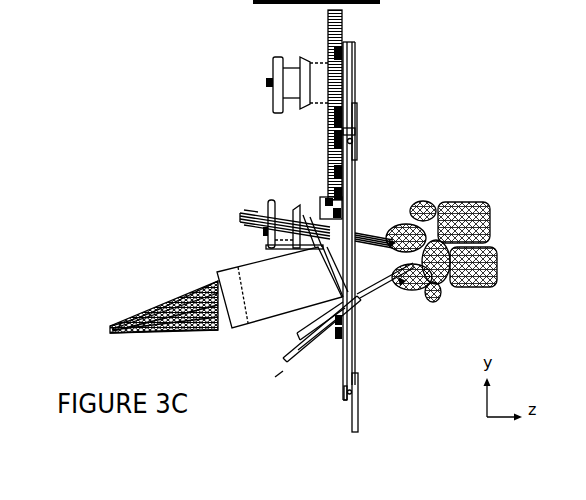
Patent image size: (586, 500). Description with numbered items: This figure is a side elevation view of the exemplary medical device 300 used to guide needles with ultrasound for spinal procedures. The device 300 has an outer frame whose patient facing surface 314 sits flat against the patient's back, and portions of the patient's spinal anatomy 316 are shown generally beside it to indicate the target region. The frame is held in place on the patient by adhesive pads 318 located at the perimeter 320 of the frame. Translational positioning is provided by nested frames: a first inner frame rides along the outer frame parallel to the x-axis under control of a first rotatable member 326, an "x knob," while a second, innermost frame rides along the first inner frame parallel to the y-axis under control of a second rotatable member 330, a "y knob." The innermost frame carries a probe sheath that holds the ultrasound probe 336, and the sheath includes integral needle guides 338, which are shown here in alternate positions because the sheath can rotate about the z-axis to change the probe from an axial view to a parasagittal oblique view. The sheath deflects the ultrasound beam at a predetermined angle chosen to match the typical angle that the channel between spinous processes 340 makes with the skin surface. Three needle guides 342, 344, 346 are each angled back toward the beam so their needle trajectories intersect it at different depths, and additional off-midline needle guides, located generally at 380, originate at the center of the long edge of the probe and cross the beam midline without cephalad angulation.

The device 300 is at (233, 108).
The patient facing surface 314 is at (372, 158).
The spinal anatomy 316 is at (467, 188).
The adhesive pads 318 is at (357, 115).
The perimeter 320 is at (349, 402).
The first rotatable member 326 is at (270, 207).
The second rotatable member 330 is at (290, 78).
The ultrasound probe 336 is at (178, 300).
The needle guide 338 is at (246, 208).
The channel between spinous processes 340 is at (390, 248).
The needle guide 342 is at (295, 327).
The needle guide 344 is at (288, 345).
The needle guide 346 is at (300, 355).
The needle guide position 380 is at (218, 216).